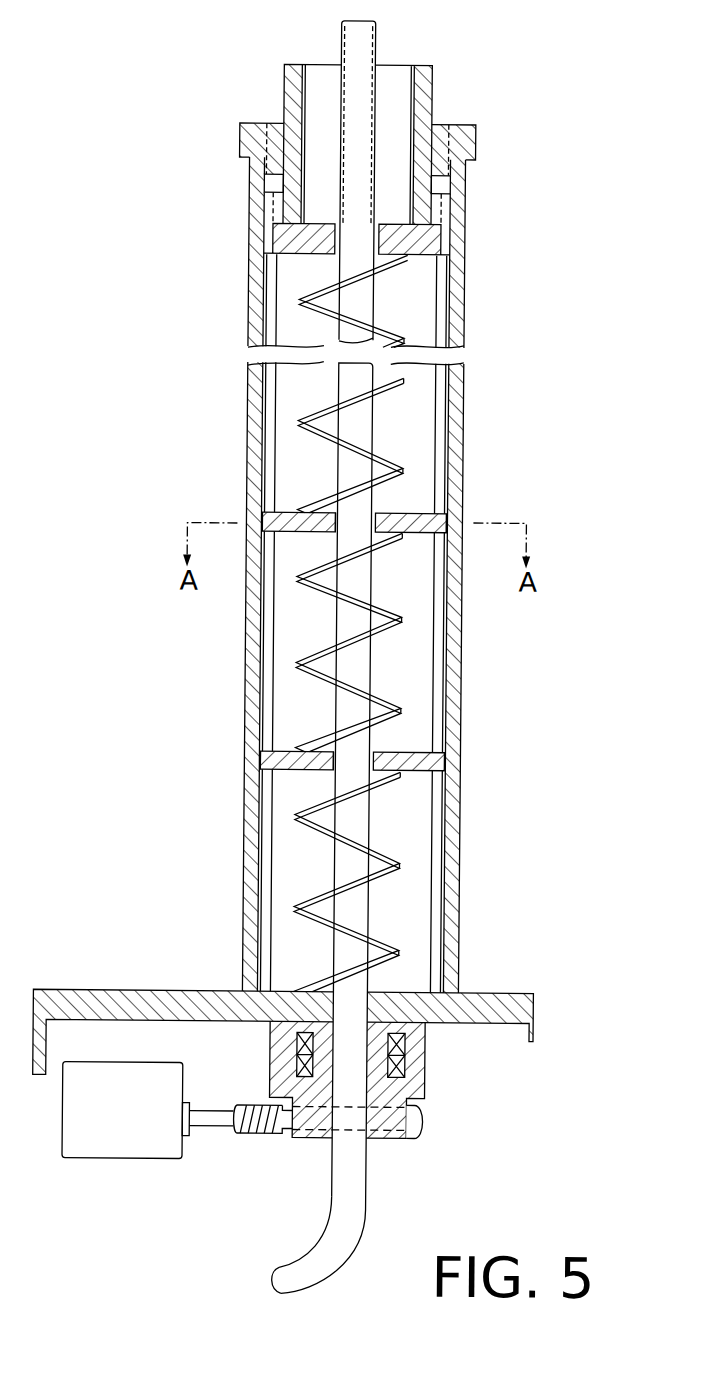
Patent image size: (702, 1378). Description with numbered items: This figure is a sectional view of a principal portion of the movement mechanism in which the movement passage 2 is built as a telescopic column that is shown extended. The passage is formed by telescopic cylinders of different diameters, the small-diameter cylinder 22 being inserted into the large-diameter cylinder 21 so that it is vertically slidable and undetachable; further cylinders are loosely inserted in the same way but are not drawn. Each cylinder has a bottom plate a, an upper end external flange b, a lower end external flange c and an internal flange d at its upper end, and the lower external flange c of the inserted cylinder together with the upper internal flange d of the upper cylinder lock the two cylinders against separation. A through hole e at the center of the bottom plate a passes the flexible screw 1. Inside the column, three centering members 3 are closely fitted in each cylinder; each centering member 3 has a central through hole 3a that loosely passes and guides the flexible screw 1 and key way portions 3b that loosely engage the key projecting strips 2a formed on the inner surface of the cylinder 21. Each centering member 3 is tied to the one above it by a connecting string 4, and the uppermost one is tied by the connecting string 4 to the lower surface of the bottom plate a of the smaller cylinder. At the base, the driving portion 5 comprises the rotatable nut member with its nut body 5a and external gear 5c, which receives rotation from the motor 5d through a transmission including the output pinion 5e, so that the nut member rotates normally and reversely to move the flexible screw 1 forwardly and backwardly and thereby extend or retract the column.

The flexible screw 1 is at (372, 40).
The movement passage 2 is at (224, 298).
The key projecting strips 2a is at (492, 891).
The large-diameter cylinder 21 is at (453, 647).
The small-diameter cylinder 22 is at (432, 77).
The centering member 3 is at (414, 512).
The through hole 3a is at (331, 500).
The key way portions 3b is at (451, 507).
The connecting string 4 is at (398, 374).
The driving portion 5 is at (231, 1158).
The nut body 5a is at (410, 1067).
The external gear 5c is at (399, 1140).
The motor 5d is at (126, 1149).
The output pinion 5e is at (276, 1134).
The bottom plate a is at (393, 230).
The upper end external flange b is at (239, 144).
The lower end external flange c is at (429, 217).
The internal flange d is at (267, 119).
The through hole e is at (336, 227).